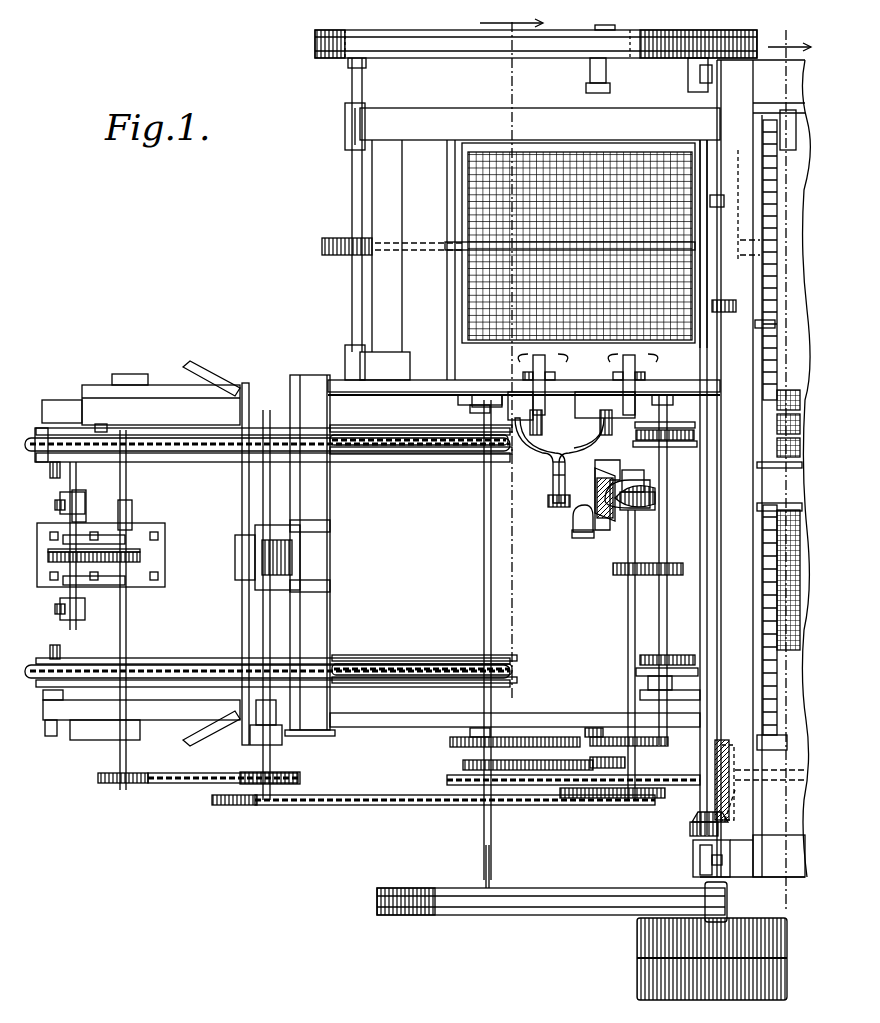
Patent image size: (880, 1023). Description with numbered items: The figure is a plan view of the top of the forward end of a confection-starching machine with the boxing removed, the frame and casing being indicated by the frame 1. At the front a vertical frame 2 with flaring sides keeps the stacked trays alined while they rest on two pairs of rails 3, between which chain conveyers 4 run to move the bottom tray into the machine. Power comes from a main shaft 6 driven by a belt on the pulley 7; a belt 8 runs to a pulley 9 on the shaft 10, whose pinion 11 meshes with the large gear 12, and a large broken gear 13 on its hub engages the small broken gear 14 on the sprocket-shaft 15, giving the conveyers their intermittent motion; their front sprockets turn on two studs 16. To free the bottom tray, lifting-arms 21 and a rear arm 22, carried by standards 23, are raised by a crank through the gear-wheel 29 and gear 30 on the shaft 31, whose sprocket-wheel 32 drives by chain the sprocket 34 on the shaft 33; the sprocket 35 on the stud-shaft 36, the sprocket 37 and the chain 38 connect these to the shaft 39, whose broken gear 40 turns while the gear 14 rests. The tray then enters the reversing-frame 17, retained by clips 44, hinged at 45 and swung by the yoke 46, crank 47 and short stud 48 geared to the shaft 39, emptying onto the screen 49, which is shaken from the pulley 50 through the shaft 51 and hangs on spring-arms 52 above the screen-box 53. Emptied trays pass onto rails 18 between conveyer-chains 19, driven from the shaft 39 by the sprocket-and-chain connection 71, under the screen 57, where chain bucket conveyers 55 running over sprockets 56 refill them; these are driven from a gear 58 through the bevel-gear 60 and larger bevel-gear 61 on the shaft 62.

The frame 1 is at (378, 733).
The vertical frame 2 is at (193, 366).
The rails 3 is at (178, 456).
The chain conveyer 4 is at (400, 448).
The main shaft 6 is at (708, 556).
The pulley 7 is at (637, 940).
The belt 8 is at (633, 888).
The pulley 9 is at (420, 888).
The shaft 10 is at (493, 862).
The pinion 11 is at (462, 765).
The large gear 12 is at (602, 795).
The large broken gear 13 is at (565, 748).
The small broken gear 14 is at (450, 743).
The sprocket-shaft 15 is at (484, 614).
The studs 16 is at (52, 472).
The reversing-frame 17 is at (540, 410).
The rails 18 is at (712, 448).
The conveyer-chains 19 is at (678, 428).
The lifting-arms 21 is at (60, 503).
The arm 22 is at (257, 550).
The standards 23 is at (47, 580).
The gear-wheel 29 is at (78, 550).
The gear 30 is at (140, 556).
The shaft 31 is at (122, 612).
The sprocket-wheel 32 is at (140, 783).
The shaft 33 is at (300, 620).
The sprocket 34 is at (300, 772).
The sprocket 35 is at (207, 783).
The stud-shaft 36 is at (240, 752).
The sprocket 37 is at (252, 805).
The chain 38 is at (368, 805).
The shaft 39 is at (628, 580).
The broken gear 40 is at (668, 742).
The clips 44 is at (525, 362).
The hinge 45 is at (526, 435).
The yoke 46 is at (556, 472).
The crank 47 is at (580, 505).
The short stud 48 is at (548, 491).
The screen 49 is at (555, 200).
The pulley 50 is at (672, 58).
The shaft 51 is at (362, 82).
The spring-arms 52 is at (718, 232).
The screen-box 53 is at (450, 189).
The chain bucket conveyers 55 is at (770, 318).
The sprockets 56 is at (765, 148).
The screen 57 is at (775, 580).
The gear 58 is at (690, 830).
The bevel-gear 60 is at (697, 816).
The bevel-gear 61 is at (725, 740).
The shaft 62 is at (767, 849).
The sprocket-and-chain connection 71 is at (673, 563).